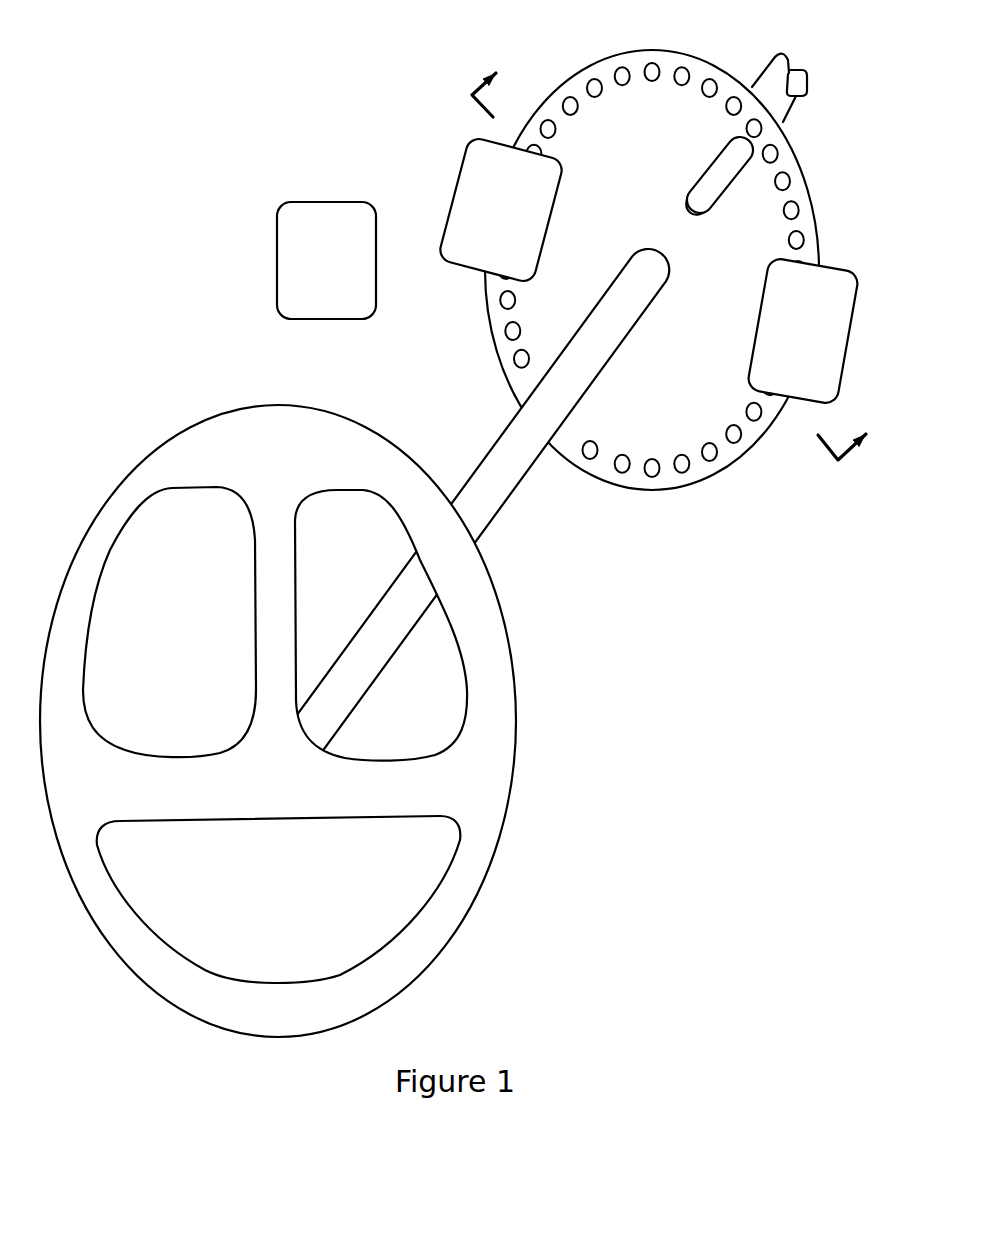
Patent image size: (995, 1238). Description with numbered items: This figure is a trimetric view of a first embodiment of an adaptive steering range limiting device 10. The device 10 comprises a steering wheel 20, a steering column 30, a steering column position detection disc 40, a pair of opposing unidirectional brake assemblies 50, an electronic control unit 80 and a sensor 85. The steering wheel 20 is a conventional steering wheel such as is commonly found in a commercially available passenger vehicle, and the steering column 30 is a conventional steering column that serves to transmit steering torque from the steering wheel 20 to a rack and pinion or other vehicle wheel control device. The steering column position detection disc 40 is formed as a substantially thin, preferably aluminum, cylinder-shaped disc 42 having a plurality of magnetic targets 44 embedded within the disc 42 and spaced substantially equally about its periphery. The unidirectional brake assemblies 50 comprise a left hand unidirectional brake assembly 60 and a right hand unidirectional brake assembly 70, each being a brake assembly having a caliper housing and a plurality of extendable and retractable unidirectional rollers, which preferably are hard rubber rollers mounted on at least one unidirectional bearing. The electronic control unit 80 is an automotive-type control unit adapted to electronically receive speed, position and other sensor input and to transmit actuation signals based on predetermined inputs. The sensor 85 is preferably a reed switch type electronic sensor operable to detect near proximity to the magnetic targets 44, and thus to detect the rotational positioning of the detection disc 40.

The adaptive steering range limiting device 10 is at (469, 521).
The steering wheel 20 is at (264, 401).
The steering column 30 is at (519, 500).
The steering column position detection disc 40 is at (626, 284).
The disc 42 is at (630, 47).
The magnetic targets 44 is at (498, 338).
The unidirectional brake assemblies 50 is at (437, 182).
The left hand unidirectional brake assembly 60 is at (452, 194).
The right hand unidirectional brake assembly 70 is at (834, 259).
The electronic control unit 80 is at (286, 202).
The sensor 85 is at (742, 180).